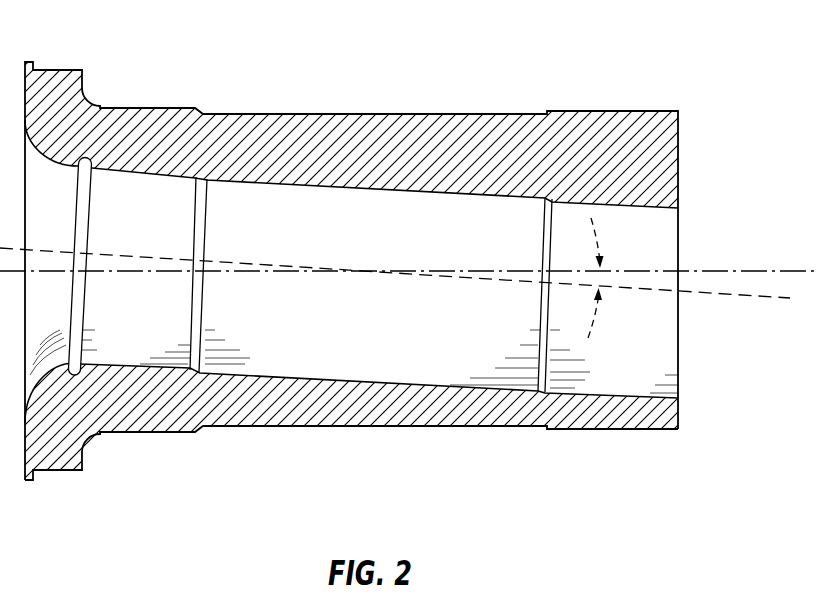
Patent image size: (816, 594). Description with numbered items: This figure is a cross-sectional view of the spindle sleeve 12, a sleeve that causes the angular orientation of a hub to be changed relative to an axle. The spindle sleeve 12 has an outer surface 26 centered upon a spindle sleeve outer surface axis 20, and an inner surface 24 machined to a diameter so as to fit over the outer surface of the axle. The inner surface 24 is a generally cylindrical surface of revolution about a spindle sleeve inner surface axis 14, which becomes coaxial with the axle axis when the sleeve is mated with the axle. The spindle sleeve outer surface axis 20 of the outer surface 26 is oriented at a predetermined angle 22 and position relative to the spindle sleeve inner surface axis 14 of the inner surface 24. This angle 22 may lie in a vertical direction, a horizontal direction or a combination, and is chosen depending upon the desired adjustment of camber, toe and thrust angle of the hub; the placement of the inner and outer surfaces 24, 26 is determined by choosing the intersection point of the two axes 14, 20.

The spindle sleeve 12 is at (408, 272).
The spindle sleeve inner surface axis 14 is at (762, 295).
The spindle sleeve outer surface axis 20 is at (758, 270).
The predetermined angle 22 is at (598, 316).
The inner surface 24 is at (337, 186).
The outer surface 26 is at (395, 428).